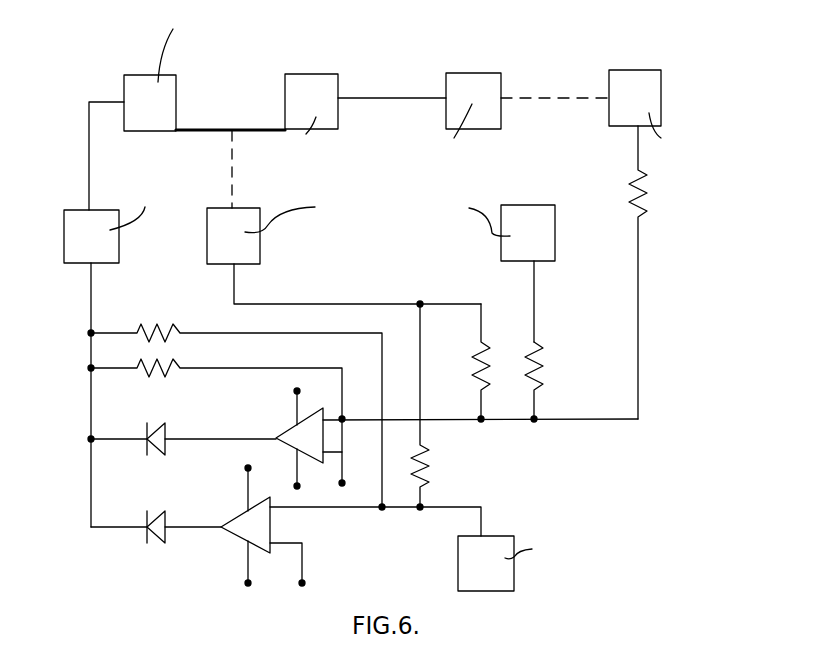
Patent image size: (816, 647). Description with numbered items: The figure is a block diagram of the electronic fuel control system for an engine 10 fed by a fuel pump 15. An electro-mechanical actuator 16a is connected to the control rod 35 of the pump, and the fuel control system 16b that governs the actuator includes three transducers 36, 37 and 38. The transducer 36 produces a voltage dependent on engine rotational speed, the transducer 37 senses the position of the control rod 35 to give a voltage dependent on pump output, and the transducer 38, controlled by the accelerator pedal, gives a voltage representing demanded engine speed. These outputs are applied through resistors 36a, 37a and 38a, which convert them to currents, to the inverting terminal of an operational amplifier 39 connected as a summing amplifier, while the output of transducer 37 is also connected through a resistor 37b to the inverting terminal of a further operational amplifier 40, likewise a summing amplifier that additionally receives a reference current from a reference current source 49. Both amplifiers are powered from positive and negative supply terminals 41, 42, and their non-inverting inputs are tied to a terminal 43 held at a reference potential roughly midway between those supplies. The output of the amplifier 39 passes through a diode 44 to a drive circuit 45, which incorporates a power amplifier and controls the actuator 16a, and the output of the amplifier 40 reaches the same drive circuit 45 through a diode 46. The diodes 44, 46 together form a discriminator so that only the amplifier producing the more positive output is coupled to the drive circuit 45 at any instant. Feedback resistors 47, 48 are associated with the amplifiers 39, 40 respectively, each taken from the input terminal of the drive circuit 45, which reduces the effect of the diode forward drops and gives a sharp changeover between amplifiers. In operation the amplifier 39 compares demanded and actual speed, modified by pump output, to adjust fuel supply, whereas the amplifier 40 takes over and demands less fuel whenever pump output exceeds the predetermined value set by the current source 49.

The engine 10 is at (477, 80).
The fuel pump 15 is at (322, 82).
The electro-mechanical actuator 16a is at (128, 82).
The fuel control system 16b is at (72, 150).
The control rod 35 is at (214, 128).
The transducer 36 is at (632, 82).
The resistor 36a is at (644, 181).
The transducer 37 is at (244, 258).
The resistor 37a is at (472, 348).
The resistor 37b is at (427, 450).
The transducer 38 is at (546, 262).
The resistor 38a is at (538, 347).
The operational amplifier 39 is at (266, 424).
The further operational amplifier 40 is at (234, 508).
The positive supply terminal 41 is at (296, 390).
The negative supply terminal 42 is at (294, 487).
The terminal 43 is at (342, 485).
The diode 44 is at (162, 454).
The drive circuit 45 is at (80, 258).
The diode 46 is at (161, 543).
The feedback resistor 47 is at (162, 376).
The feedback resistor 48 is at (163, 326).
The reference current source 49 is at (507, 582).